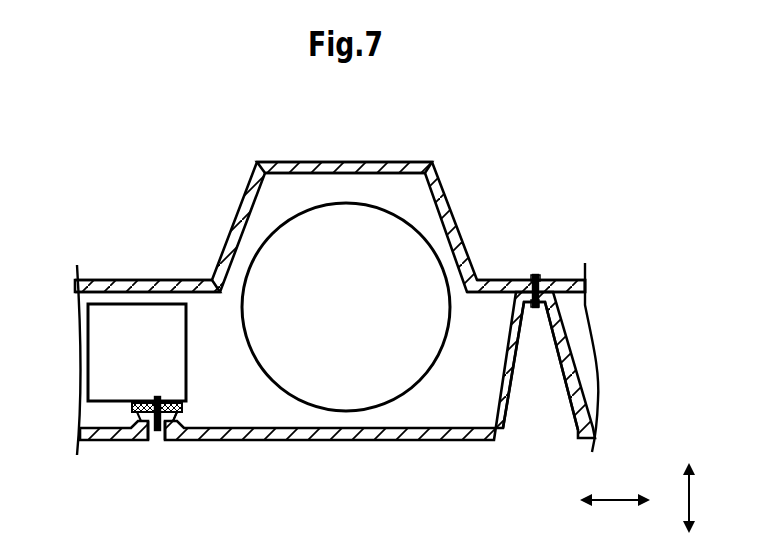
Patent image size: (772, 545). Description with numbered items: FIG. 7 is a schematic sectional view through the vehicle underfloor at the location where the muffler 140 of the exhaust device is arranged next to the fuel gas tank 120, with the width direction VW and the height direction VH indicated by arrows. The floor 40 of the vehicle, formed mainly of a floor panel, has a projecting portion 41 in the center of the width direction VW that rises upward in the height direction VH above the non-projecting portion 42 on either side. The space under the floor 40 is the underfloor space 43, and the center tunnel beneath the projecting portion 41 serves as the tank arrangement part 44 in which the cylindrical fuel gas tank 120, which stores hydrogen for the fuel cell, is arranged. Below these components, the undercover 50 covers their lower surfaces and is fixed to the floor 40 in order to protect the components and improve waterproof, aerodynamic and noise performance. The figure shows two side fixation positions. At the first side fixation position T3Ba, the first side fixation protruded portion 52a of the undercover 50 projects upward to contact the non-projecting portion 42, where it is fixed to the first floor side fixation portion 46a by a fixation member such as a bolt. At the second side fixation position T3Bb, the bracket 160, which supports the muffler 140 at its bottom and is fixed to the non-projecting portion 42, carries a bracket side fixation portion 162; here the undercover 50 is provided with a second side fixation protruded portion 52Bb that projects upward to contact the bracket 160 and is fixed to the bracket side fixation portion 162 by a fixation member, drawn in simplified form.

The floor 40 is at (587, 287).
The projecting portion 41 is at (367, 162).
The non-projecting portion 42 is at (177, 280).
The underfloor space 43 is at (214, 340).
The tank arrangement part 44 is at (422, 210).
The first floor side fixation portion 46a is at (544, 273).
The undercover 50 is at (350, 440).
The first side fixation protruded portion 52a is at (530, 426).
The second side fixation protruded portion 52Bb is at (163, 443).
The fuel gas tank 120 is at (368, 322).
The muffler 140 is at (160, 367).
The bracket 160 is at (132, 407).
The bracket side fixation portion 162 is at (195, 401).
The first side fixation position T3Ba is at (573, 205).
The second side fixation position T3Bb is at (109, 241).
The width direction VW is at (615, 484).
The height direction VH is at (707, 498).